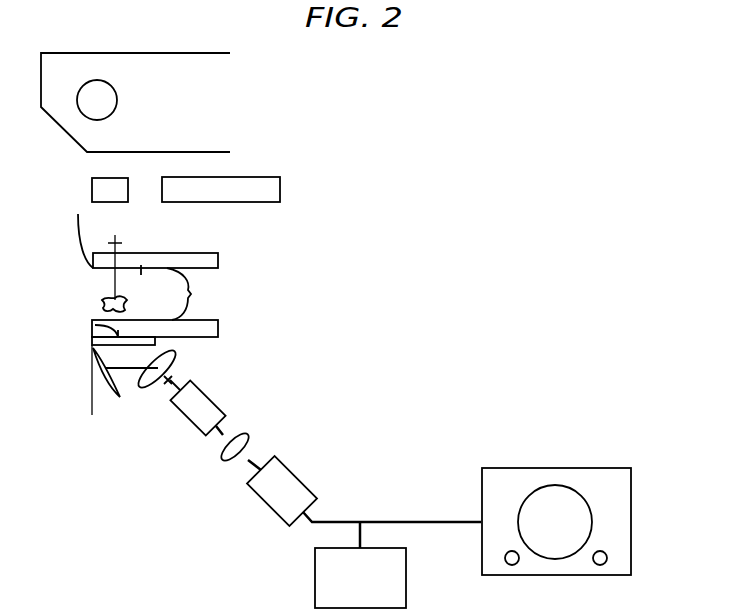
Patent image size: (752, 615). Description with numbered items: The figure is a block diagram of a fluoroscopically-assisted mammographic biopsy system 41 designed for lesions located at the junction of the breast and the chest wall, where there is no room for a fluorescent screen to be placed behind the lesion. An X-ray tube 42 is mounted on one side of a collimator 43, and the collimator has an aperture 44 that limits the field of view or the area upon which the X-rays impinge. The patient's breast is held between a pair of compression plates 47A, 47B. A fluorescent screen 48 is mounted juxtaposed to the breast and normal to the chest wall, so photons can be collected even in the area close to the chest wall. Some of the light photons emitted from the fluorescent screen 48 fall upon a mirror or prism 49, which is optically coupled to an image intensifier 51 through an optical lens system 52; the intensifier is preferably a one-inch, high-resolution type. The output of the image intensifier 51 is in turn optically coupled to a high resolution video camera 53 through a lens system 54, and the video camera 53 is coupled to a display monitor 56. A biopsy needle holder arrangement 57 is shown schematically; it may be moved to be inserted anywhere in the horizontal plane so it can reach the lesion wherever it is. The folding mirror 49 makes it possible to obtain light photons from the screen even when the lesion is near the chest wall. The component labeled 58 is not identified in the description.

The fluoroscopically-assisted mammographic biopsy system 41 is at (378, 102).
The X-ray tube 42 is at (210, 101).
The collimator 43 is at (280, 190).
The aperture 44 is at (143, 193).
The compression plate 47A is at (218, 260).
The compression plate 47B is at (218, 328).
The fluorescent screen 48 is at (95, 325).
The mirror or prism 49 is at (108, 408).
The image intensifier 51 is at (218, 398).
The optical lens system 52 is at (176, 354).
The high resolution video camera 53 is at (300, 471).
The lens system 54 is at (250, 437).
The display monitor 56 is at (582, 468).
The biopsy needle holder arrangement 57 is at (102, 301).
The power supply / fiber probe 58 is at (406, 563).